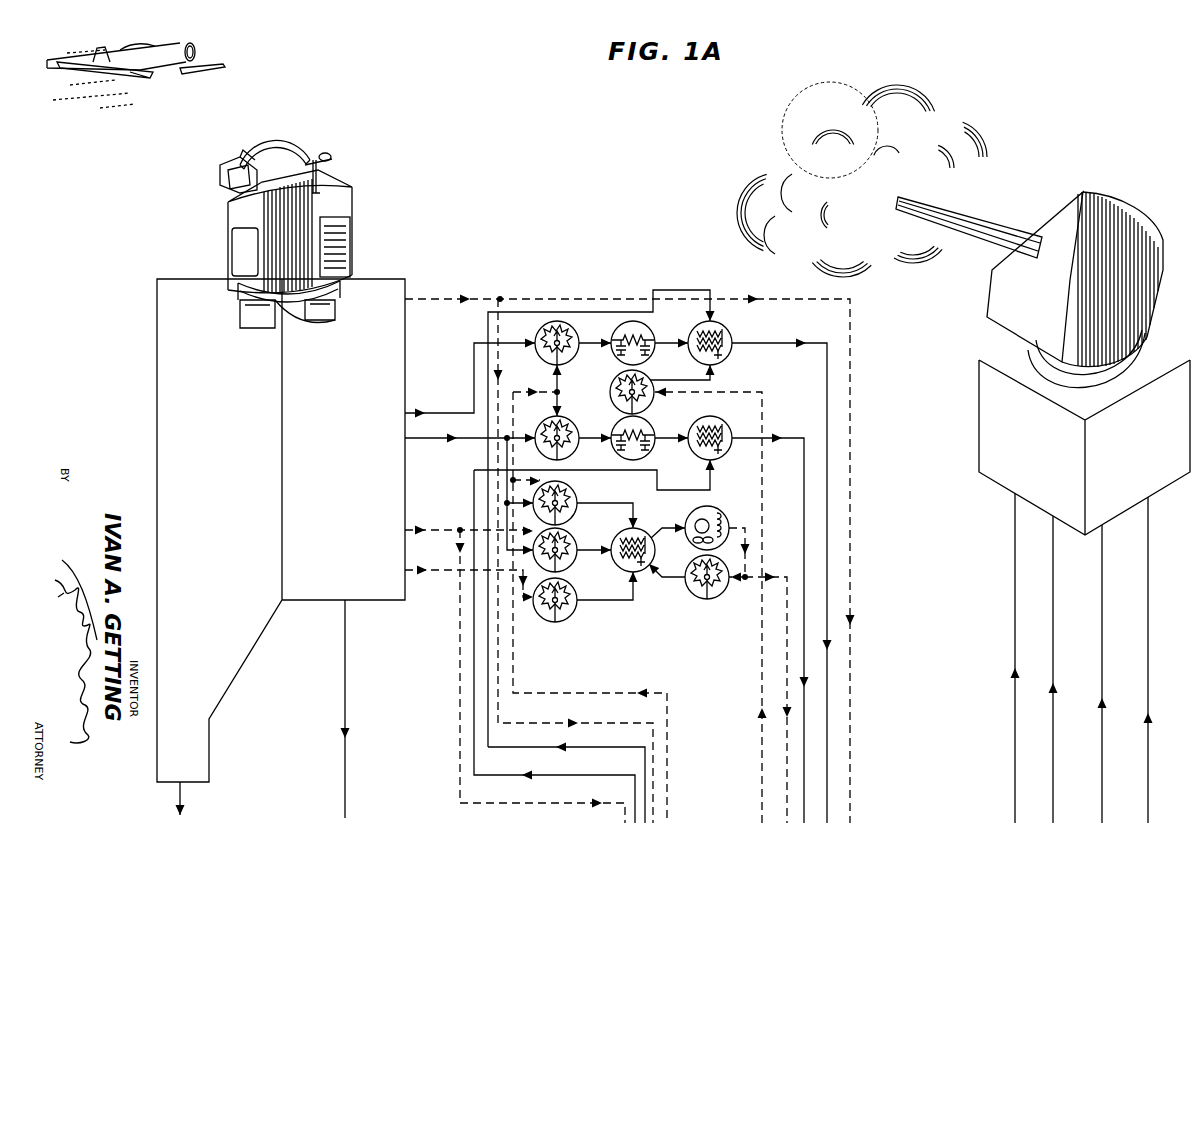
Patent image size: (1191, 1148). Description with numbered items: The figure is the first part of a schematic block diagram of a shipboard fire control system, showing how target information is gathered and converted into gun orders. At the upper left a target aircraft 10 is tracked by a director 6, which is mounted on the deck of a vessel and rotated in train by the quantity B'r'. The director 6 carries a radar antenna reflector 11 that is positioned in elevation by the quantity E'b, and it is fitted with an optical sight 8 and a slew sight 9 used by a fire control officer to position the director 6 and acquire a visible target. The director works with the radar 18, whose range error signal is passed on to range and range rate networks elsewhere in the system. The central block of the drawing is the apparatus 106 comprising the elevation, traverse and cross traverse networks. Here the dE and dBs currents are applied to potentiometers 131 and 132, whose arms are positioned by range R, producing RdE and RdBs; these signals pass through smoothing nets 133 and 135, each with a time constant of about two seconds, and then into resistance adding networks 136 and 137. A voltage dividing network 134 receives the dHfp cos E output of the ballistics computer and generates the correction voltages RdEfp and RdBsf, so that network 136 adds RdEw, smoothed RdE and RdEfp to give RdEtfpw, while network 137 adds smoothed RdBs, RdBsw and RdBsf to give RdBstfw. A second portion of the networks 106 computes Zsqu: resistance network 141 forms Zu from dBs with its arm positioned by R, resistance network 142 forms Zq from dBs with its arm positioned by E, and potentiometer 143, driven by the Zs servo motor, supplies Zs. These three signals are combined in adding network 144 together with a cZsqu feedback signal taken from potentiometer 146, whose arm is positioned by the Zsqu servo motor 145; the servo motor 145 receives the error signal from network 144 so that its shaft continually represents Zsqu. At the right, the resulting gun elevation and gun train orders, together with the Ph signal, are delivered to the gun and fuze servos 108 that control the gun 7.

The director 6 is at (360, 190).
The gun 7 is at (1017, 325).
The optical sight 8 is at (218, 172).
The slew sight 9 is at (330, 158).
The aircraft 10 is at (108, 109).
The radar antenna reflector 11 is at (286, 144).
The radar 18 is at (158, 318).
The elevation, traverse, and cross traverse networks 106 is at (646, 625).
The gun and fuze servos 108 is at (993, 421).
The potentiometer 131 is at (541, 327).
The potentiometer 132 is at (547, 410).
The smoothing net 133 is at (648, 328).
The voltage dividing network 134 is at (616, 377).
The smoothing net 135 is at (618, 423).
The resistance adding network 136 is at (726, 327).
The resistance adding network 137 is at (724, 424).
The resistance network 141 is at (571, 488).
The resistance network 142 is at (571, 534).
The potentiometer 143 is at (571, 616).
The adding network 144 is at (642, 529).
The Zsqu servo motor 145 is at (721, 512).
The potentiometer 146 is at (692, 592).